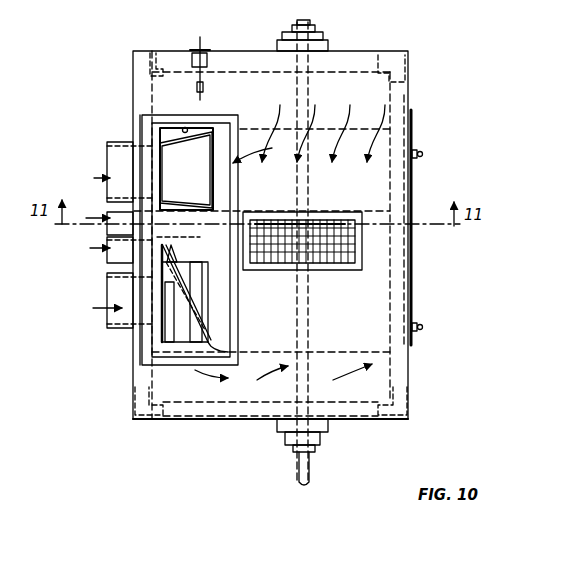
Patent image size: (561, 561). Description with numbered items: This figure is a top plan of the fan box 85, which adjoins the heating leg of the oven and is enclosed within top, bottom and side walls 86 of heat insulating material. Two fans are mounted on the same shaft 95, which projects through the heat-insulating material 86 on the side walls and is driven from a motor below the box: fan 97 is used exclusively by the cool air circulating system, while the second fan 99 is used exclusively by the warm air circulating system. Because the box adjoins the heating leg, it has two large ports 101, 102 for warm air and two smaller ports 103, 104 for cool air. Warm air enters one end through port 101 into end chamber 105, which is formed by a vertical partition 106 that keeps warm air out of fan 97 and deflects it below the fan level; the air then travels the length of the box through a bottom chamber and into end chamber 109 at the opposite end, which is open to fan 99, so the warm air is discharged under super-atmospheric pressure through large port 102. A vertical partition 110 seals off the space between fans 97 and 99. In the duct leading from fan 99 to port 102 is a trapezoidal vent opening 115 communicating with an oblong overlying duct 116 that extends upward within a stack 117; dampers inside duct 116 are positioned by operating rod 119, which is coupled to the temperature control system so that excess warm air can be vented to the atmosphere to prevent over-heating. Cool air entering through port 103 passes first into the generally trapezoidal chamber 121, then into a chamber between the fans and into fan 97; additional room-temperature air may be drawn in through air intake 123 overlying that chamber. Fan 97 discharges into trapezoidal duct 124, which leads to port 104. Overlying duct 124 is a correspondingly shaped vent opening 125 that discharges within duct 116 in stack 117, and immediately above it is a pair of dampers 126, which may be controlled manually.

The fan box 85 is at (410, 50).
The top, bottom and side walls of heat insulating material 86 is at (148, 81).
The shaft 95 is at (298, 20).
The fan 97 is at (410, 306).
The second fan 99 is at (412, 141).
The port 101 is at (108, 318).
The port 102 is at (112, 160).
The port 103 is at (110, 212).
The port 104 is at (108, 262).
The end chamber 105 is at (225, 404).
The vertical partition 106 is at (350, 352).
The end chamber 109 is at (266, 74).
The vertical partition 110 is at (343, 212).
The vent opening 115 is at (211, 192).
The duct 116 is at (184, 128).
The stack 117 is at (212, 120).
The operating rod 119 is at (199, 37).
The chamber 121 is at (180, 223).
The air intake 123 is at (293, 225).
The trapezoidal duct 124 is at (130, 299).
The vent opening 125 is at (182, 283).
The dampers 126 is at (196, 338).